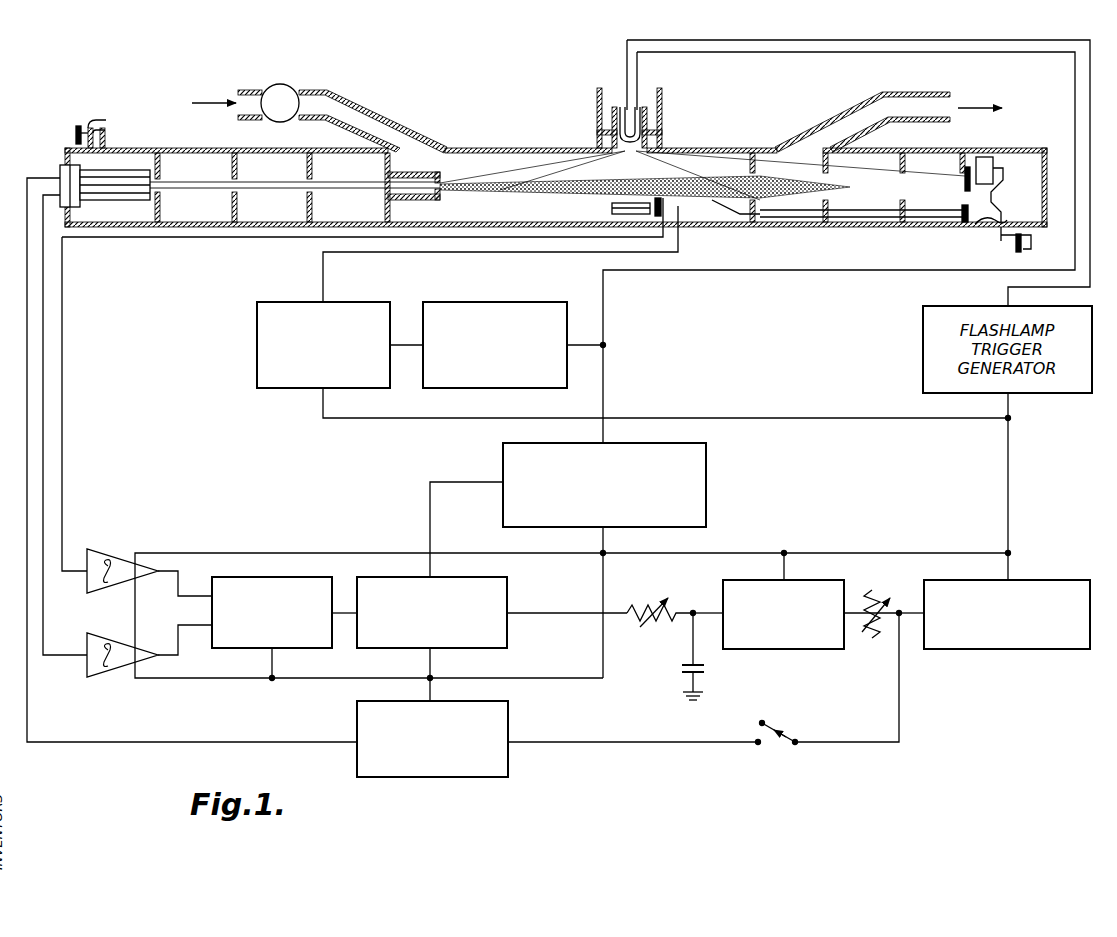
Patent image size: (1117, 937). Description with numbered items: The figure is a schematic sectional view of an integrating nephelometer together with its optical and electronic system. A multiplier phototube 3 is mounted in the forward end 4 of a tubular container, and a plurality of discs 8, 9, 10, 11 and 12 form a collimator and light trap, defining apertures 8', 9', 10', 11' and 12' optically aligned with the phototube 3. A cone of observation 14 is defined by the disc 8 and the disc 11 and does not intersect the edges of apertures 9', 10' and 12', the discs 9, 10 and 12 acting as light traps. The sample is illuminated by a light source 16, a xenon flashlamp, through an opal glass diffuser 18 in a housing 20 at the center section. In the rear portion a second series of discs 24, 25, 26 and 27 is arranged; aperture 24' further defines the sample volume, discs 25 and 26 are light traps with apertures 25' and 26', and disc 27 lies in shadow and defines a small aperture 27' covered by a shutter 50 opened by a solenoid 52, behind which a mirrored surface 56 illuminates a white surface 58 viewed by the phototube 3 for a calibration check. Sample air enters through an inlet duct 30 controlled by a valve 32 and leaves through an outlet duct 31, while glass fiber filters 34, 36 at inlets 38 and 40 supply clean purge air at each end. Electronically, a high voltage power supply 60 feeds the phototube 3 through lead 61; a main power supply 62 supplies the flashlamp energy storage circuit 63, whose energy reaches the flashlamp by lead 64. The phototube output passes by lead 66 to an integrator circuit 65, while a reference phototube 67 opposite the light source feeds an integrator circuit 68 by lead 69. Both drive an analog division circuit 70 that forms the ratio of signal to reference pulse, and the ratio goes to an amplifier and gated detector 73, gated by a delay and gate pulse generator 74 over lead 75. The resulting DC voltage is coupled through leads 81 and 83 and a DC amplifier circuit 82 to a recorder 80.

The multiplier phototube 3 is at (113, 178).
The forward end 4 is at (64, 152).
The disc 8 is at (165, 170).
The aperture 8' is at (190, 172).
The disc 9 is at (240, 171).
The aperture 9' is at (255, 174).
The disc 10 is at (316, 171).
The aperture 10' is at (334, 174).
The disc 11 is at (412, 157).
The aperture 11' is at (436, 143).
The disc 12 is at (468, 151).
The aperture 12' is at (493, 149).
The cone of observation 14 is at (532, 181).
The light source 16 is at (624, 109).
The opal glass diffuser 18 is at (658, 148).
The housing 20 is at (644, 108).
The disc 24 is at (741, 170).
The aperture 24' is at (784, 170).
The disc 25 is at (861, 172).
The aperture 25' is at (862, 170).
The disc 26 is at (930, 172).
The aperture 26' is at (929, 170).
The disc 27 is at (977, 147).
The aperture 27' is at (941, 181).
The inlet duct 30 is at (246, 89).
The outlet duct 31 is at (930, 92).
The valve 32 is at (290, 90).
The glass fiber filter 34 is at (74, 128).
The glass fiber filter 36 is at (1016, 258).
The inlet 38 is at (100, 124).
The inlet 40 is at (1026, 228).
The shutter 50 is at (1002, 188).
The solenoid 52 is at (1000, 157).
The mirrored surface 56 is at (978, 227).
The white surface 58 is at (992, 200).
The high voltage power supply 60 is at (509, 713).
The lead 61 is at (28, 430).
The main power supply 62 is at (336, 302).
The flashlamp energy storage 63 is at (486, 302).
The lead 64 is at (604, 305).
The integrator circuit 65 is at (100, 676).
The lead 66 is at (44, 385).
The reference phototube 67 is at (610, 204).
The integrator circuit 68 is at (98, 549).
The lead 69 is at (63, 324).
The analog division circuit 70 is at (273, 577).
The amplifier and gated detector 73 is at (504, 584).
The delay and gate pulse generator 74 is at (708, 488).
The lead 75 is at (452, 481).
The recorder 80 is at (1060, 580).
The lead 81 is at (574, 610).
The DC amplifier circuit 82 is at (820, 580).
The lead 83 is at (856, 588).